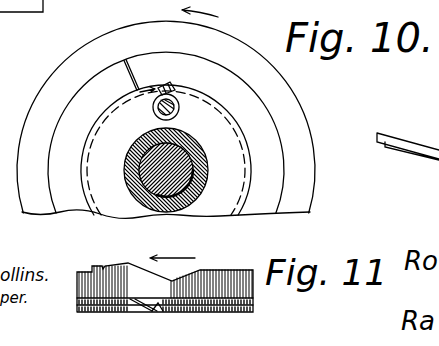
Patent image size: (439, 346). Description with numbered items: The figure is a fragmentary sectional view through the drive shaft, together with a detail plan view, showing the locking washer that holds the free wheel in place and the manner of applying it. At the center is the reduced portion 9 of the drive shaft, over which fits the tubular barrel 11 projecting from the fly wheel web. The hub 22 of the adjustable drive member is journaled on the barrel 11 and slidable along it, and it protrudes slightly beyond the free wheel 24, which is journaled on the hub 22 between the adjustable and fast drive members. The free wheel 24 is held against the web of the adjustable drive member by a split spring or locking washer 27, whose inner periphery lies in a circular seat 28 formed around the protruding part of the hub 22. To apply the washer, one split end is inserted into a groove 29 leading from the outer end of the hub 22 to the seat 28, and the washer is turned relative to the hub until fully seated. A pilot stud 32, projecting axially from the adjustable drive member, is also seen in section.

In FIG. 10, the reduced portion of the drive shaft 9 is at (183, 158).
In FIG. 10, the tubular barrel 11 is at (198, 160).
In FIG. 11, the hub 22 is at (228, 263).
In FIG. 10, the free wheel 24 is at (295, 136).
In FIG. 10, the locking washer 27 is at (166, 133).
In FIG. 10, the circular seat 28 is at (172, 77).
In FIG. 11, the circular seat 28 is at (157, 307).
In FIG. 10, the groove 29 is at (173, 86).
In FIG. 11, the groove 29 is at (150, 309).
In FIG. 10, the pilot studs 32 is at (158, 105).